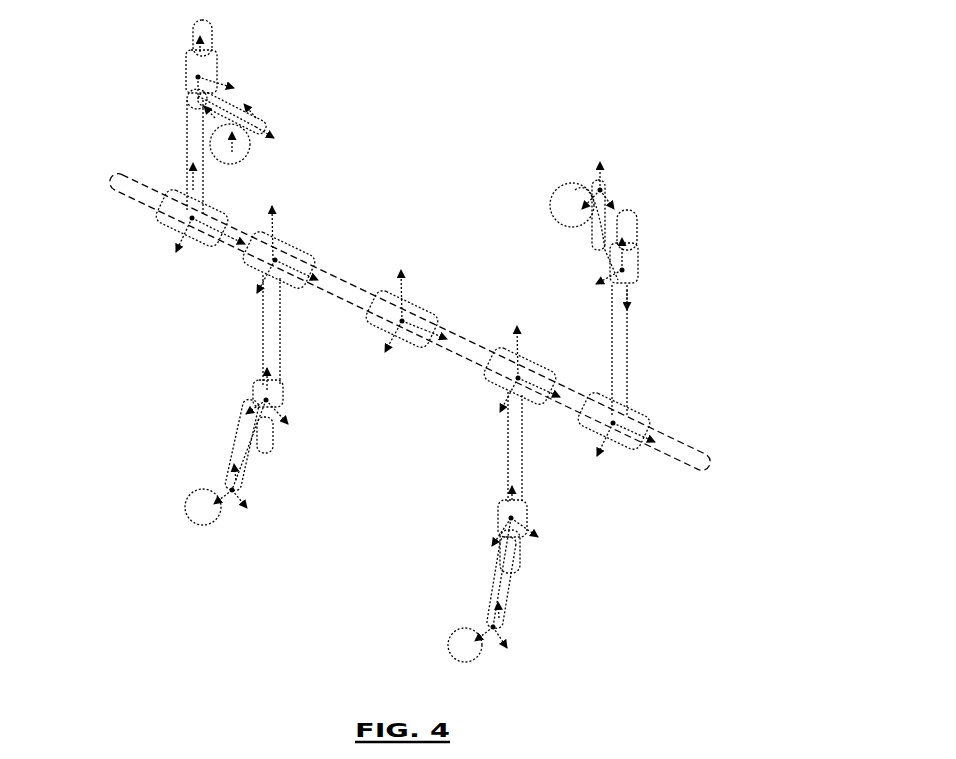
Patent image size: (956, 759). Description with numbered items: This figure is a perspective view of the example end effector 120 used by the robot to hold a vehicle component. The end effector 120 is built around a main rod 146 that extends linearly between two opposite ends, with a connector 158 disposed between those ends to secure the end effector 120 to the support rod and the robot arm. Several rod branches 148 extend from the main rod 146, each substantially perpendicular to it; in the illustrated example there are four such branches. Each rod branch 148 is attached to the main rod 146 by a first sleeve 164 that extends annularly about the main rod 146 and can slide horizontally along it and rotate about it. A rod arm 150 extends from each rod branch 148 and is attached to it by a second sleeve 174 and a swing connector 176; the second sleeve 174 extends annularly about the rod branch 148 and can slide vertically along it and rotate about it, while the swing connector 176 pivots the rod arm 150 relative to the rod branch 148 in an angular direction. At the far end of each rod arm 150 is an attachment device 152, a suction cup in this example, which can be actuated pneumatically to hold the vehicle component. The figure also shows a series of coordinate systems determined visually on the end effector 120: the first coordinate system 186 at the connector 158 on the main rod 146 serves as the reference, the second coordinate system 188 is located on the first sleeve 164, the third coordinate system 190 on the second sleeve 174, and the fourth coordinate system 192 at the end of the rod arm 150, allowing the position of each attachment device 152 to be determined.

The end effector 120 is at (770, 212).
The main rod 146 is at (694, 452).
The rod branch 148 is at (268, 327).
The rod arm 150 is at (503, 585).
The attachment device 152 is at (200, 505).
The connector 158 is at (412, 340).
The first sleeve 164 is at (296, 262).
The second sleeve 174 is at (520, 507).
The swing connector 176 is at (508, 550).
The first coordinate system 186 is at (403, 320).
The second coordinate system 188 is at (192, 218).
The third coordinate system 190 is at (198, 77).
The fourth coordinate system 192 is at (256, 127).